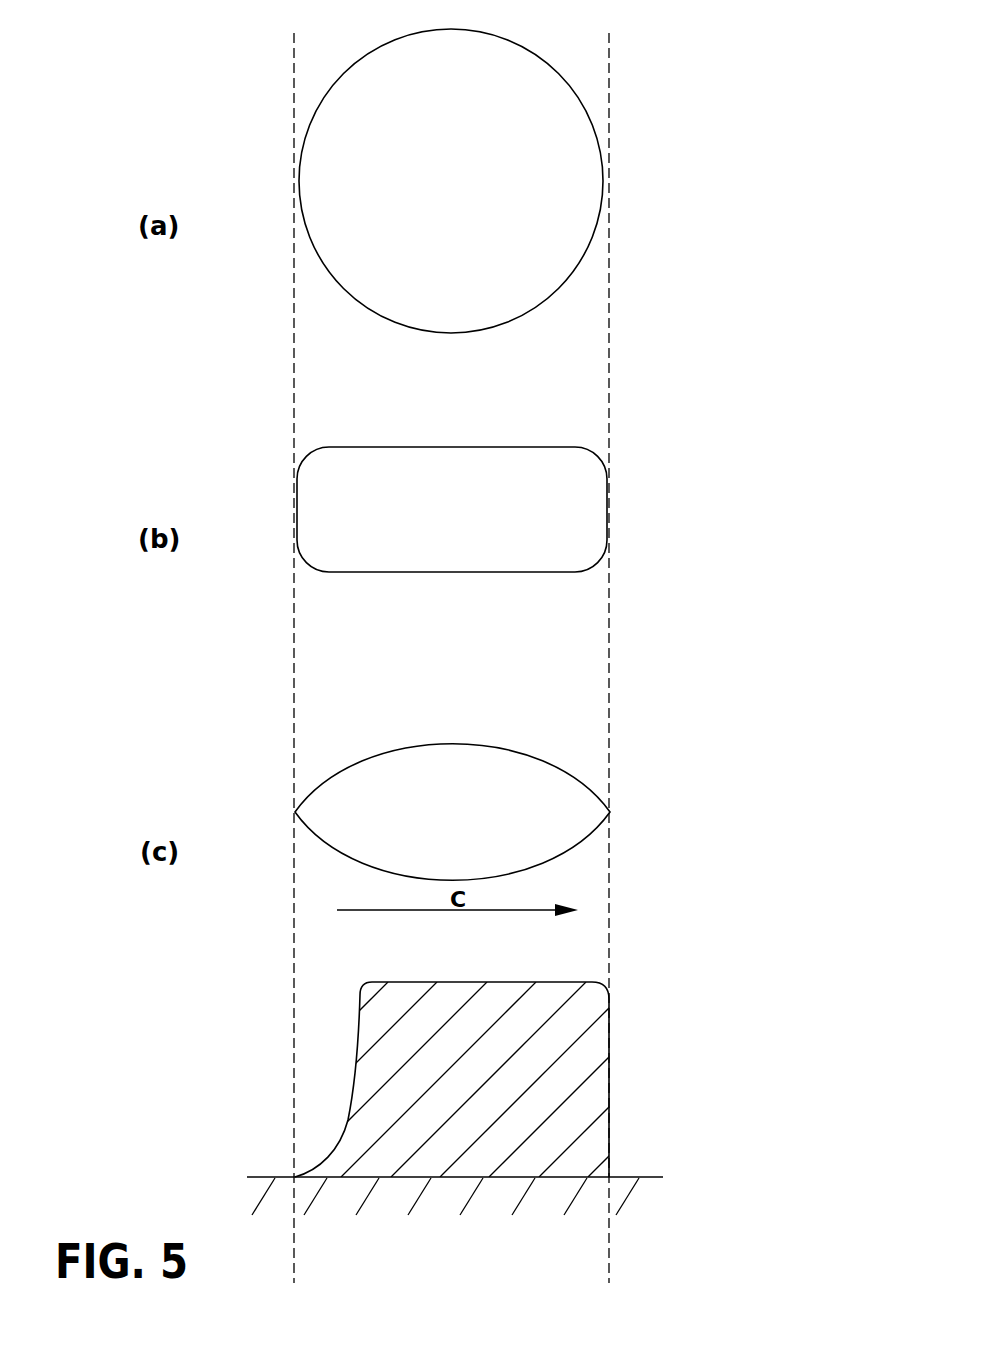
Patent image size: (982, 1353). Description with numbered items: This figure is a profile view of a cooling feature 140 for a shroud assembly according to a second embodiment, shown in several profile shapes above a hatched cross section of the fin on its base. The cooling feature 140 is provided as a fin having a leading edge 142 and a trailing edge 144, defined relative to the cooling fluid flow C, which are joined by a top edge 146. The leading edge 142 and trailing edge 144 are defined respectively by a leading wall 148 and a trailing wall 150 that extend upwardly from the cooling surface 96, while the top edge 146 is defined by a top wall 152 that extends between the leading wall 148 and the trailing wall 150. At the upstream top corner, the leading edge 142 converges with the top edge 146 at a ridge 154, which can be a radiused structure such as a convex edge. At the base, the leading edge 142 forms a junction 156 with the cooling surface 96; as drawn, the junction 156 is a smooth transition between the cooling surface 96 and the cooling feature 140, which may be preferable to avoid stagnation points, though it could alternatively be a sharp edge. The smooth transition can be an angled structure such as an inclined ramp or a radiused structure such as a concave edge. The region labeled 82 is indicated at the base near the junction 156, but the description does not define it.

The cooling feature 140 is at (124, 977).
The leading edge 142 is at (298, 179).
The trailing edge 144 is at (603, 177).
The top edge 146 is at (517, 200).
The leading wall 148 is at (357, 1077).
The trailing wall 150 is at (609, 1128).
The top wall 152 is at (427, 981).
The ridge 154 is at (360, 981).
The junction 156 is at (323, 1163).
The base surface 82 is at (256, 1172).
The cooling surface 96 is at (642, 1177).